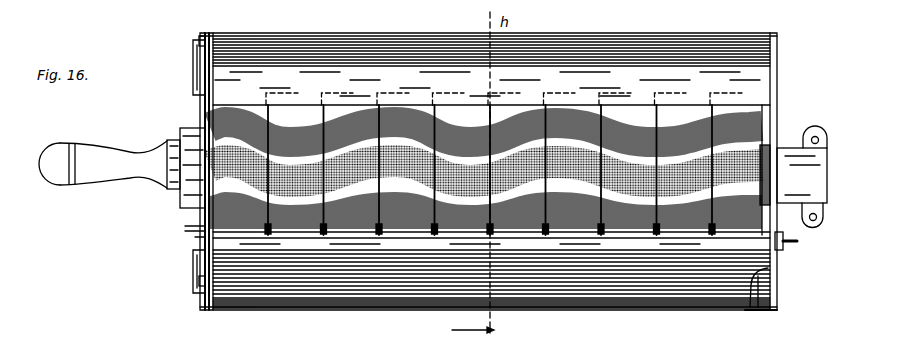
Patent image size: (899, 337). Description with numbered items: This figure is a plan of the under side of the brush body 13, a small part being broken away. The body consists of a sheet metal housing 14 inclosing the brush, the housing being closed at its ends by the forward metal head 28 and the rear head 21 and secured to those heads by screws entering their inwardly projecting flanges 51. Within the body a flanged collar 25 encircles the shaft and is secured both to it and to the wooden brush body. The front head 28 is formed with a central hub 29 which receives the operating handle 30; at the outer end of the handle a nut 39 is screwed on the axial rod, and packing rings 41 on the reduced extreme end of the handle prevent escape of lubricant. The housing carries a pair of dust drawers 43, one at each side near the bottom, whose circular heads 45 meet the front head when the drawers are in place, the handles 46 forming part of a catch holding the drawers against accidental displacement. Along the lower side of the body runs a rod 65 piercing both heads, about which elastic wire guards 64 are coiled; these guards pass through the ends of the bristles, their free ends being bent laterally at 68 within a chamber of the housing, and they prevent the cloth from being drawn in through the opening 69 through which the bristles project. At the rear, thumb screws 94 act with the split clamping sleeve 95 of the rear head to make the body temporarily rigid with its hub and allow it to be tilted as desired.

The brush body 13 is at (600, 46).
The sheet metal housing 14 is at (648, 310).
The rear head 21 is at (770, 279).
The flanged collar 25 is at (773, 145).
The forward metal head 28 is at (205, 110).
The central hub 29 is at (192, 183).
The operating handle 30 is at (118, 180).
The nut 39 is at (55, 147).
The packing rings 41 is at (77, 146).
The dust drawers 43 is at (213, 47).
The circular heads 45 is at (204, 282).
The handles 46 is at (193, 50).
The inwardly projecting flanges 51 is at (758, 311).
The wire guards 64 is at (516, 124).
The rod 65 is at (796, 241).
The lateral ends 68 is at (403, 93).
The opening 69 is at (297, 119).
The thumb screws 94 is at (815, 134).
The split clamping sleeve 95 is at (802, 175).